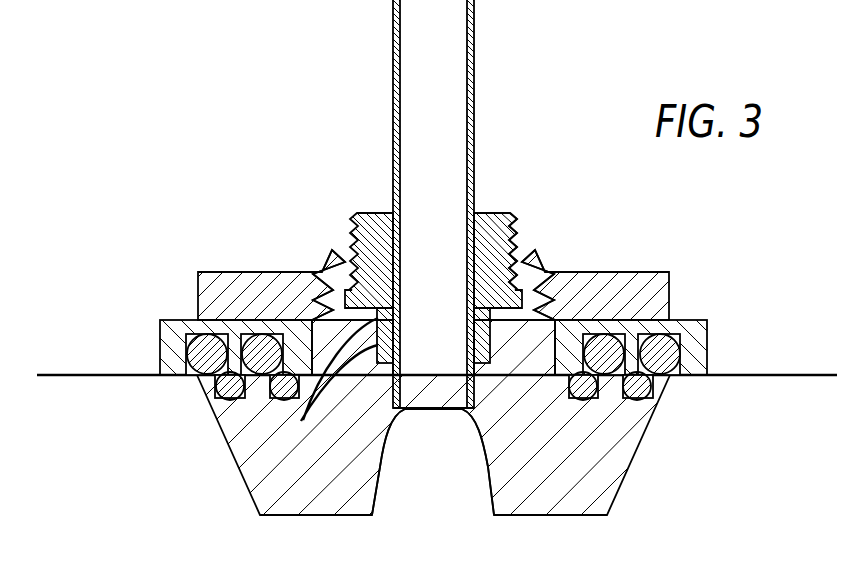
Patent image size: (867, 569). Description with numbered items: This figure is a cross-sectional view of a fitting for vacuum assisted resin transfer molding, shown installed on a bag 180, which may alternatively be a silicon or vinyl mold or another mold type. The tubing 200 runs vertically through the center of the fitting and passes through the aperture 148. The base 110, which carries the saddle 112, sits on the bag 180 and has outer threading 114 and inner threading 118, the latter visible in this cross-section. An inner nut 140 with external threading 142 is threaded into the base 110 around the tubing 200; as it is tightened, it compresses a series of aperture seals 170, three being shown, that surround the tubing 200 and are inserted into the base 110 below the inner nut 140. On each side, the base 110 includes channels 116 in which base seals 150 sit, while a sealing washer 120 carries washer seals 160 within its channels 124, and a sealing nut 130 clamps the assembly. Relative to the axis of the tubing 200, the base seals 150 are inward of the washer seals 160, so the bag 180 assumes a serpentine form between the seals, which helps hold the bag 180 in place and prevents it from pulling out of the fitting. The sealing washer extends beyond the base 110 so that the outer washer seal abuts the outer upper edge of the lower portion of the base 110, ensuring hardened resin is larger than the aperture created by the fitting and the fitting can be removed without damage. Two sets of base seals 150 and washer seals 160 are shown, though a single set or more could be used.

The base 110 is at (607, 475).
The saddle 112 is at (432, 408).
The outer threading 114 is at (535, 258).
The channels 116 is at (231, 400).
The inner threading 118 is at (363, 283).
The sealing washer 120 is at (697, 328).
The channels 124 is at (271, 338).
The sealing nut 130 is at (650, 282).
The inner nut 140 is at (495, 228).
The external threading 142 is at (520, 250).
The aperture 148 is at (397, 243).
The base seals 150 is at (637, 399).
The washer seals 160 is at (665, 356).
The aperture seals 170 is at (303, 420).
The bag 180 is at (88, 375).
The tubing 200 is at (474, 65).